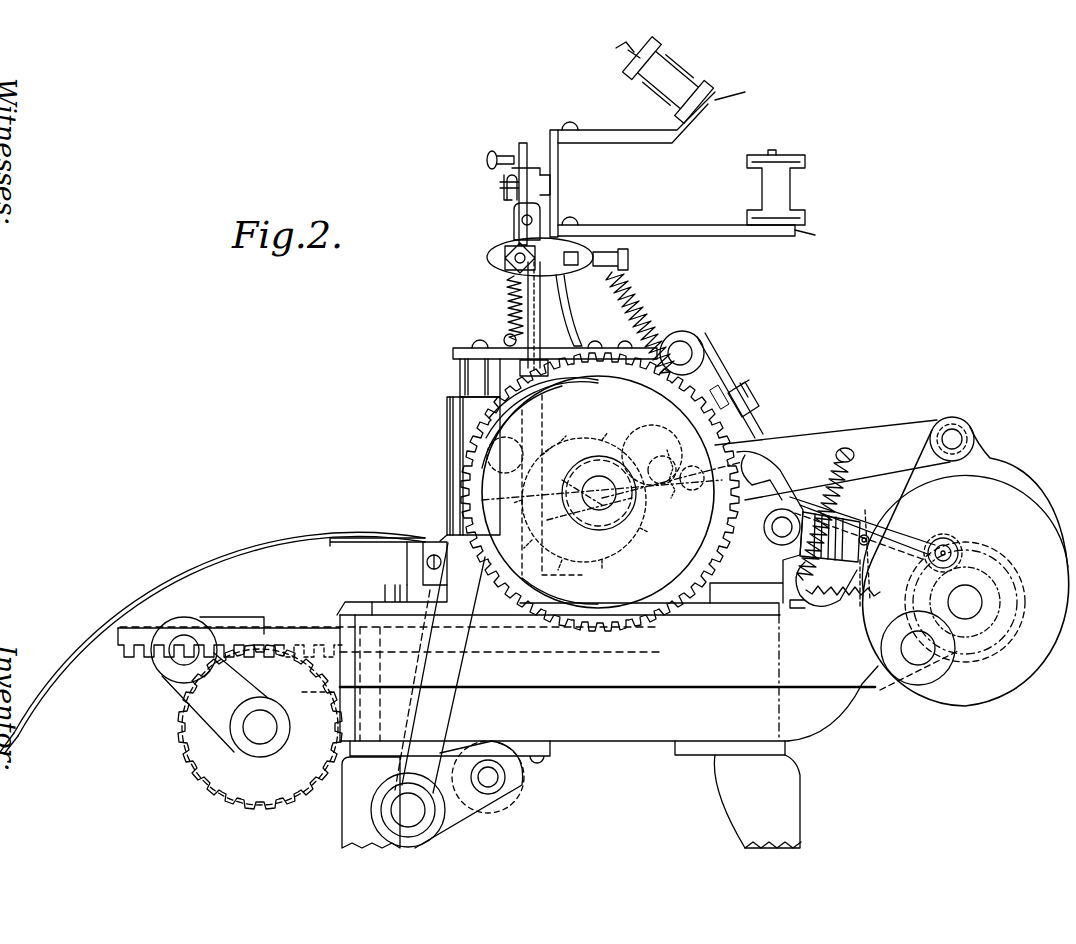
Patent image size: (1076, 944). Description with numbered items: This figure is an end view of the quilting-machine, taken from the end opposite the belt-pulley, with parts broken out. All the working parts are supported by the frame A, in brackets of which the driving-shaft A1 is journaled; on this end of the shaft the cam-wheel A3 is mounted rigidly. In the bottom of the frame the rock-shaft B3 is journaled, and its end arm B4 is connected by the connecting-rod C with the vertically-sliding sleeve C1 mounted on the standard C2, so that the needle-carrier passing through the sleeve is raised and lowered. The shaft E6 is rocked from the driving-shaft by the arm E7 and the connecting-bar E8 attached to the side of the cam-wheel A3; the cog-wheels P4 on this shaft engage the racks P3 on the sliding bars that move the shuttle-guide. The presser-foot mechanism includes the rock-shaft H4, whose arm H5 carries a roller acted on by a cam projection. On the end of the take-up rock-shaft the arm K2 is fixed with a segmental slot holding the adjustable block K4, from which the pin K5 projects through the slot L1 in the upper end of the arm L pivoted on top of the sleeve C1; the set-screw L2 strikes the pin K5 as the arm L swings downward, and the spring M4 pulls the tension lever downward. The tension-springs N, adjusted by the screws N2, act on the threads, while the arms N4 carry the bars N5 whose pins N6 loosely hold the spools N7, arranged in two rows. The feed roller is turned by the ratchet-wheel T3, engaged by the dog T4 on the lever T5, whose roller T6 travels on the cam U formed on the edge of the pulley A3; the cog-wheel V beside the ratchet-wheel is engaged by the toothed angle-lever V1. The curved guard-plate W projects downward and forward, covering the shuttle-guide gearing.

The frame A is at (607, 725).
The driving-shaft A1 is at (940, 628).
The cam-wheel A3 is at (1000, 622).
The rock-shaft B3 is at (469, 794).
The arm B4 is at (419, 810).
The connecting-rod C is at (443, 718).
The vertically-sliding sleeve C1 is at (470, 469).
The standard C2 is at (555, 368).
The shaft E6 is at (260, 727).
The arm E7 is at (240, 700).
The connecting-bar E8 is at (497, 684).
The rock-shaft H4 is at (690, 346).
The arm H5 is at (745, 425).
The arm K2 is at (490, 259).
The block K4 is at (568, 282).
The pin K5 is at (580, 249).
The arm L is at (541, 338).
The slot L1 is at (514, 229).
The set-screw L2 is at (559, 188).
The spring M4 is at (508, 288).
The tension-spring N is at (516, 178).
The screw N2 is at (486, 158).
The arm N4 is at (705, 225).
The bar N5 is at (775, 154).
The pin N6 is at (790, 138).
The spool N7 is at (714, 131).
The rack P3 is at (231, 642).
The cog-wheel P4 is at (260, 727).
The ratchet-wheel T3 is at (567, 485).
The dog T4 is at (612, 462).
The lever T5 is at (830, 511).
The roller T6 is at (975, 438).
The cam U is at (965, 566).
The cog-wheel V is at (600, 492).
The angle-lever V1 is at (865, 535).
The curved guard-plate W is at (223, 641).